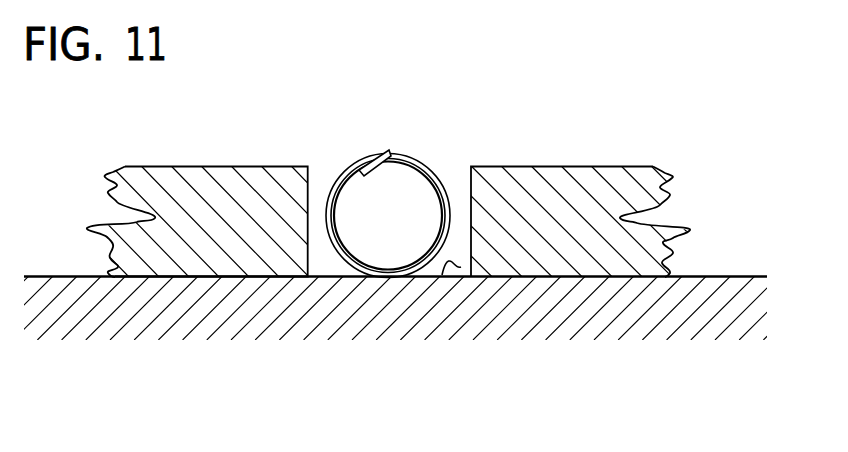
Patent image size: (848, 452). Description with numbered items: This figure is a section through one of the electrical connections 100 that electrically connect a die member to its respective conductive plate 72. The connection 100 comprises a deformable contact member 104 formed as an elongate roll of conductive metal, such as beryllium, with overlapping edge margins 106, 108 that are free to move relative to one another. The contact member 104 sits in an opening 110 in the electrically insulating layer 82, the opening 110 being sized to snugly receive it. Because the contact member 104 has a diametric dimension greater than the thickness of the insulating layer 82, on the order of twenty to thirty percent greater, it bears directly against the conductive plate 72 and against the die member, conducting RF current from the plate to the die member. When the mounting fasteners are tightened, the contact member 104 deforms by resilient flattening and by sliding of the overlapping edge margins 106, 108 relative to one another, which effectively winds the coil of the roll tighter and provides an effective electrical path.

The first conductive plate 72 is at (785, 243).
The second electrically insulating layer 82 is at (612, 166).
The electrical connection 100 is at (400, 159).
The deformable contact member 104 is at (336, 180).
The overlapping edge margin 106 is at (380, 152).
The overlapping edge margin 108 is at (386, 163).
The opening 110 is at (442, 275).